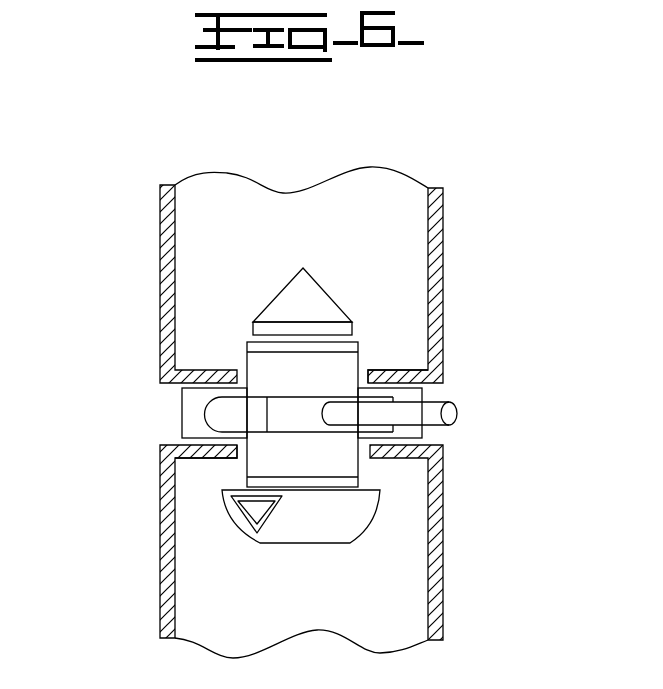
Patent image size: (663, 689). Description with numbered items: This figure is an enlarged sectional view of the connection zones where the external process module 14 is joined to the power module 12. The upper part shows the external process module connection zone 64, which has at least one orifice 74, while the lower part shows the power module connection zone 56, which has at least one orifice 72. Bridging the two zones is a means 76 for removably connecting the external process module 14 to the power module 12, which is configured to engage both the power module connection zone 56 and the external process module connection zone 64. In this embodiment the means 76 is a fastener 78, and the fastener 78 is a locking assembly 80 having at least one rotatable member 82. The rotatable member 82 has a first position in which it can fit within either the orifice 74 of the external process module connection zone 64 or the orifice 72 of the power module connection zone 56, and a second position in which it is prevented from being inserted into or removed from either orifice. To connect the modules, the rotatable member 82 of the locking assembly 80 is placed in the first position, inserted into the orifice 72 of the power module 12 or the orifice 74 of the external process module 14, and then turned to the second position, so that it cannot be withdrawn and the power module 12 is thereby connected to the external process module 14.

The power module 12 is at (122, 611).
The external process module 14 is at (125, 230).
The power module connection zone 56 is at (417, 562).
The external process module connection zone 64 is at (420, 232).
The orifice 72 is at (245, 457).
The orifice 74 is at (365, 375).
The means for removably connecting 76 is at (150, 409).
The fastener 78 is at (142, 436).
The locking assembly 80 is at (478, 414).
The rotatable member 82 is at (336, 525).